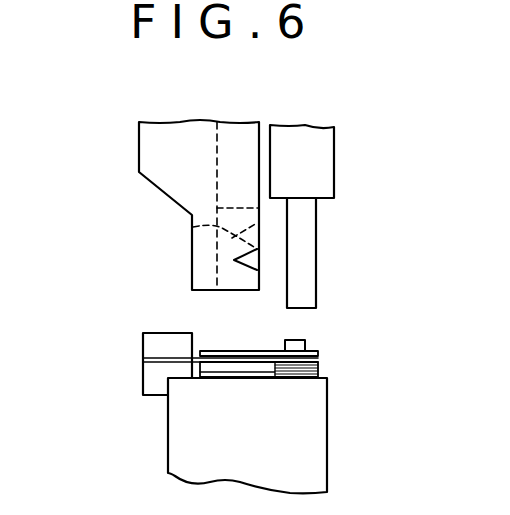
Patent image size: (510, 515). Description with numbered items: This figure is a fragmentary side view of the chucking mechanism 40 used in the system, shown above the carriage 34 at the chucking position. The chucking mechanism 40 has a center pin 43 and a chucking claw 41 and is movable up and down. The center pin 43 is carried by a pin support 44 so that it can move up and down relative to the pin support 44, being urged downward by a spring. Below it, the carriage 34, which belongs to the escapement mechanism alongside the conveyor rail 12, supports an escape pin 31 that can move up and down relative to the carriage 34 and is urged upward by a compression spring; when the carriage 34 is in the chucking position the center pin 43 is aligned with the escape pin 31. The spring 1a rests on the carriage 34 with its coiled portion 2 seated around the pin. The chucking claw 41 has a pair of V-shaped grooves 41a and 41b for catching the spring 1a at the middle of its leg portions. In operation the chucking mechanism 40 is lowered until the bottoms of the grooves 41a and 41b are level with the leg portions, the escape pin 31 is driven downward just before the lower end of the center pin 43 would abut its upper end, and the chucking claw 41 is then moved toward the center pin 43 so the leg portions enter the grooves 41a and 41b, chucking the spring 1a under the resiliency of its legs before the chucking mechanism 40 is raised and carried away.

The chucking mechanism 40 is at (108, 217).
The chucking claw 41 is at (146, 168).
The V-shaped groove 41a is at (192, 227).
The V-shaped groove 41b is at (234, 260).
The pin support 44 is at (334, 188).
The center pin 43 is at (316, 308).
The conveyor rail 12 is at (152, 333).
The coiled portion 2 is at (318, 353).
The escape pin 31 is at (303, 346).
The spring 1a is at (328, 365).
The carriage 34 is at (308, 437).